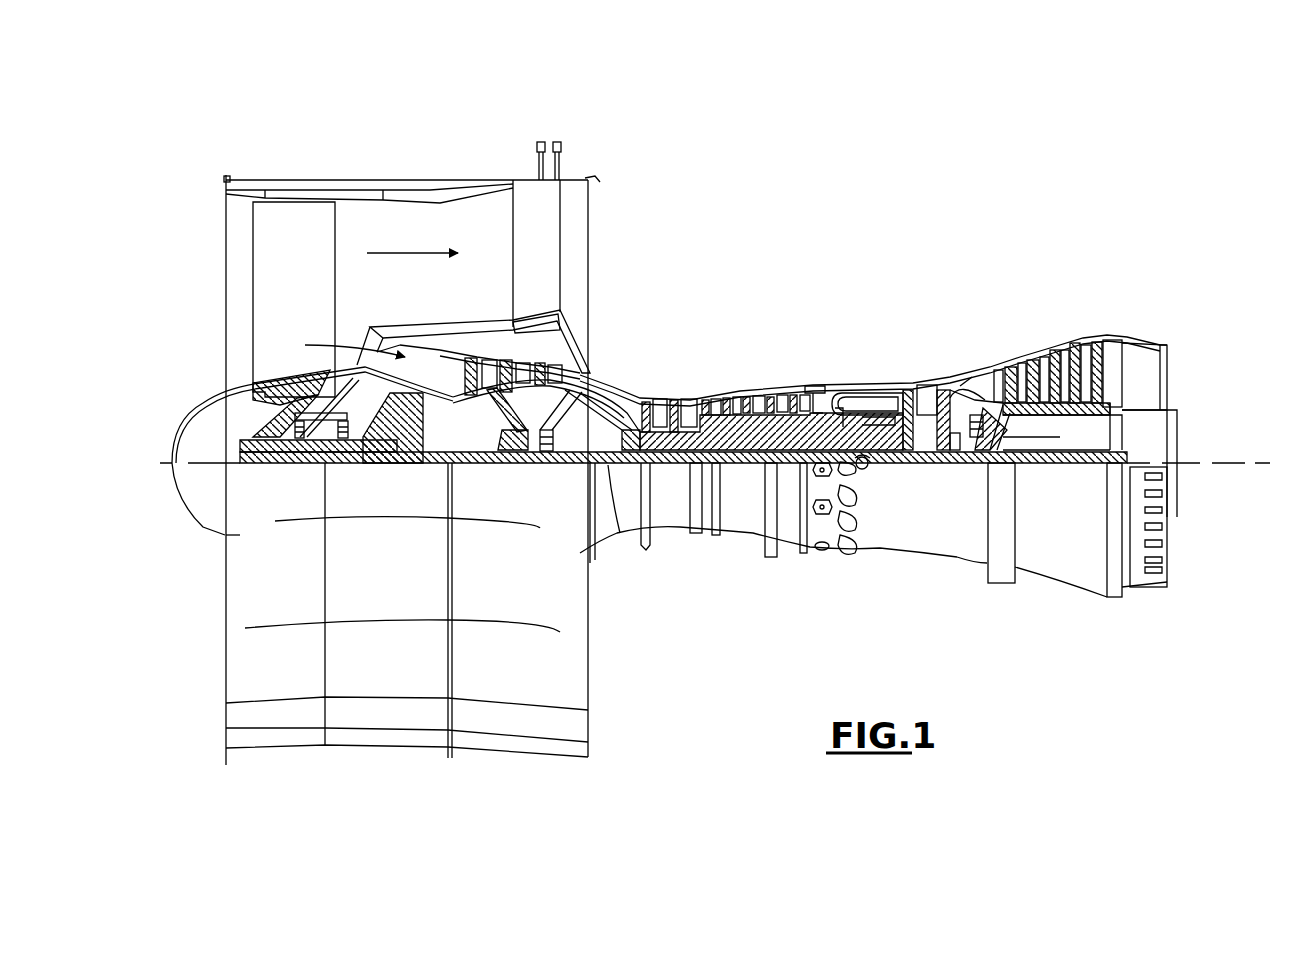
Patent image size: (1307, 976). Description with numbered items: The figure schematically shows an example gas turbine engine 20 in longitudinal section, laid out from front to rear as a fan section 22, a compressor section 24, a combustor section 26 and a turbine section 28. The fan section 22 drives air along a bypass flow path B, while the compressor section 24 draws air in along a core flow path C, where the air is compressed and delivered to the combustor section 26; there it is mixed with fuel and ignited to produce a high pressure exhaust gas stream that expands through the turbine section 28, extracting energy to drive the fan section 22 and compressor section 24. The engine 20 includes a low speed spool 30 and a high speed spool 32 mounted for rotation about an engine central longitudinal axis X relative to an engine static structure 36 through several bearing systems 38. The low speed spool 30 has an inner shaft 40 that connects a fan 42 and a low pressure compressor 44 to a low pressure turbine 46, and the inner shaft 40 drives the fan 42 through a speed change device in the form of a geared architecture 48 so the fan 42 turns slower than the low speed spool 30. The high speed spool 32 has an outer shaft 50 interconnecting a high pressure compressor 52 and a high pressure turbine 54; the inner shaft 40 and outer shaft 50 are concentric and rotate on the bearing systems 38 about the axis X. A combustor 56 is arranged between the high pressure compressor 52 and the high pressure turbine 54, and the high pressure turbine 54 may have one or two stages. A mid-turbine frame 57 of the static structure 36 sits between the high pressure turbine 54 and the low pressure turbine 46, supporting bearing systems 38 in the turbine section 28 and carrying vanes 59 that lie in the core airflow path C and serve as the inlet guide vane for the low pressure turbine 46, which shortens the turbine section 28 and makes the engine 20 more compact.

The gas turbine engine 20 is at (868, 229).
The fan section 22 is at (435, 158).
The compressor section 24 is at (790, 298).
The combustor section 26 is at (895, 298).
The turbine section 28 is at (1125, 298).
The low speed spool 30 is at (743, 468).
The high speed spool 32 is at (810, 410).
The engine static structure 36 is at (787, 553).
The bearing systems 38 is at (302, 463).
The inner shaft 40 is at (617, 533).
The fan 42 is at (308, 310).
The low pressure compressor section 44 is at (523, 363).
The low pressure turbine section 46 is at (1052, 350).
The geared architecture 48 is at (408, 455).
The outer shaft 50 is at (873, 467).
The high pressure compressor section 52 is at (723, 433).
The high pressure turbine section 54 is at (925, 387).
The combustor 56 is at (860, 407).
The mid-turbine frame 57 is at (972, 377).
The vanes 59 is at (1003, 437).
The bypass flow path B is at (410, 253).
The core flow path C is at (345, 347).
The engine central longitudinal axis X is at (1258, 463).